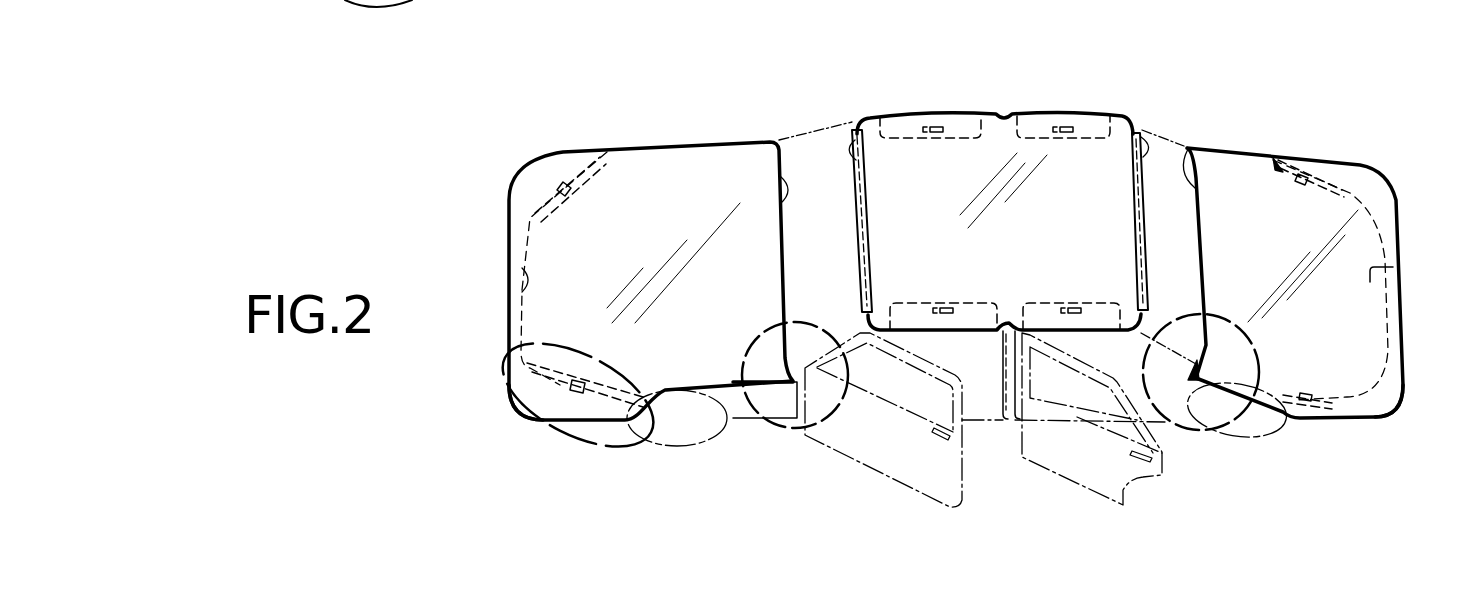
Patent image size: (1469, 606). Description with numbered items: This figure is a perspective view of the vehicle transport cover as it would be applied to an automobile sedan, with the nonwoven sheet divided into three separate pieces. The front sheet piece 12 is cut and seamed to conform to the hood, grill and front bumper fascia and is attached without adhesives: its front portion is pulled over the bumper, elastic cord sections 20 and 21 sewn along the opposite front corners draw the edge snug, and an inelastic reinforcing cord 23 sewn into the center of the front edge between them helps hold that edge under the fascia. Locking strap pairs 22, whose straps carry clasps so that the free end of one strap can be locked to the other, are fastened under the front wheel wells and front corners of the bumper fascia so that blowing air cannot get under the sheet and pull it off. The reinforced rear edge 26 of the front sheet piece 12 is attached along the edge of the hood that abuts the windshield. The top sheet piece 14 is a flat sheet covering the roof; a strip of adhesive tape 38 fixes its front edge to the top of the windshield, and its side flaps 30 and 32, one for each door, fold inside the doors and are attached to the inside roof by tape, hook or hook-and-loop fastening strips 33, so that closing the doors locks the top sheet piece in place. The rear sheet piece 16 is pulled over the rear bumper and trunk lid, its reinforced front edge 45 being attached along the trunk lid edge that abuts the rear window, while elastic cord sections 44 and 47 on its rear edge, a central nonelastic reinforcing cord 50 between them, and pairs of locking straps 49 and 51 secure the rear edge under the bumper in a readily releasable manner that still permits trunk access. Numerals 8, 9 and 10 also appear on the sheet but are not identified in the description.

The partition assembly 8 is at (518, 421).
The hinge 9 is at (778, 432).
The hinge 10 is at (1212, 430).
The front sheet piece 12 is at (659, 252).
The top sheet piece 14 is at (1020, 255).
The rear sheet piece 16 is at (1292, 262).
The elastic cord section 20 is at (548, 184).
The elastic cord section 21 is at (565, 396).
The locking strap pairs 22 is at (577, 170).
The inelastic reinforcing cord 23 is at (522, 288).
The rear edge of front sheet piece 26 is at (787, 190).
The side flap 30 is at (957, 128).
The side flap 32 is at (1043, 127).
The releasable fastening strips 33 is at (933, 130).
The adhesive tape strip 38 is at (850, 155).
The elastic cord section 44 is at (1380, 382).
The front edge of rear sheet piece 45 is at (1184, 152).
The elastic cord section 47 is at (1363, 197).
The locking strap pair 49 is at (1312, 400).
The nonelastic reinforcing cord 50 is at (1397, 272).
The locking strap pair 51 is at (1327, 187).